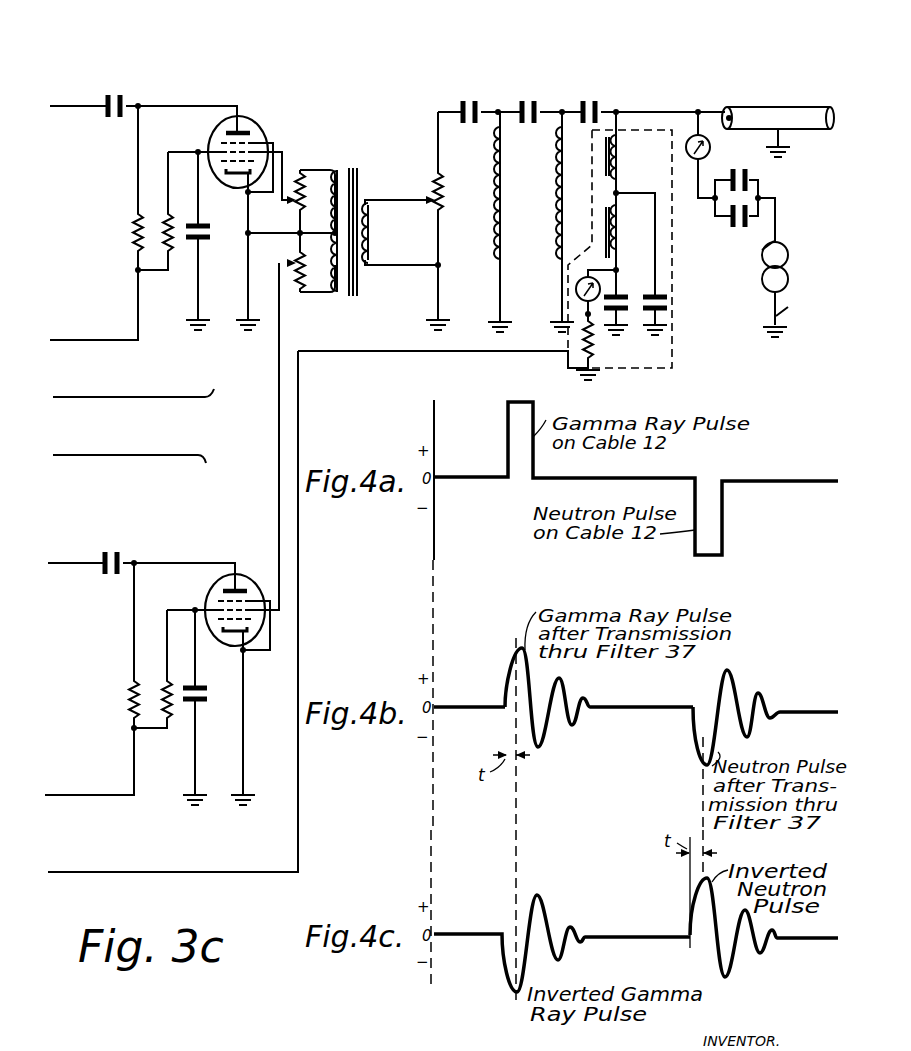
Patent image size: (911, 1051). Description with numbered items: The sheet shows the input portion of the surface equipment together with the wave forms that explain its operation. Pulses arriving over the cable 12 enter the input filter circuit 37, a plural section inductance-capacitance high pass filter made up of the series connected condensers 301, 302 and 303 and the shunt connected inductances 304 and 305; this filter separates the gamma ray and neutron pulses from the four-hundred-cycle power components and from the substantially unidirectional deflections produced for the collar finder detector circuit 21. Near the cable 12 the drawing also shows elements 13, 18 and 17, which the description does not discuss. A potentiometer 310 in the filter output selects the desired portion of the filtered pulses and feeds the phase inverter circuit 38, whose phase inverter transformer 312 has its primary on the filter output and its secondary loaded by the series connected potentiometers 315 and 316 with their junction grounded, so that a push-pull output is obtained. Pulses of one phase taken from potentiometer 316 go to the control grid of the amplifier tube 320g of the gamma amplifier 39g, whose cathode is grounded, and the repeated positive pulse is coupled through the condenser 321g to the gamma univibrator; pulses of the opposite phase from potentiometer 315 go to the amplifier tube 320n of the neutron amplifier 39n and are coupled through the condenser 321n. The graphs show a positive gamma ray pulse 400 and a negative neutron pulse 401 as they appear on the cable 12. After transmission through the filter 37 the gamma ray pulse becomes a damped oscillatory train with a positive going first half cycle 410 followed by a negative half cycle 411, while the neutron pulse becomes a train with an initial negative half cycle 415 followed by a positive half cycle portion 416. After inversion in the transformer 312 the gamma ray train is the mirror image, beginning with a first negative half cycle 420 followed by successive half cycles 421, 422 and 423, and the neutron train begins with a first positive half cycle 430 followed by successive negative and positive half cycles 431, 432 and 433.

In FIG. 3C, the amplifier 39g is at (276, 42).
In FIG. 3C, the condenser 321g is at (118, 96).
In FIG. 3C, the amplifier tube 320g is at (211, 134).
In FIG. 3C, the phase inverter circuit 38 is at (425, 98).
In FIG. 3C, the potentiometer 316 is at (308, 177).
In FIG. 3C, the potentiometer 315 is at (308, 292).
In FIG. 3C, the phase inverter transformer 312 is at (375, 155).
In FIG. 3C, the potentiometer 310 is at (432, 187).
In FIG. 3C, the input filter circuit 37 is at (765, 47).
In FIG. 3C, the condenser 303 is at (473, 93).
In FIG. 3C, the condenser 302 is at (536, 93).
In FIG. 3C, the condenser 301 is at (596, 93).
In FIG. 3C, the inductance 305 is at (497, 225).
In FIG. 3C, the inductance 304 is at (558, 225).
In FIG. 3C, the collar finder detector circuit 21 is at (672, 283).
In FIG. 3C, the meter 13 is at (709, 110).
In FIG. 3C, the cable 12 is at (797, 108).
In FIG. 3C, the capacitor network 18 is at (721, 208).
In FIG. 3C, the power supply 17 is at (789, 262).
In FIG. 3C, the amplifier 39n is at (268, 548).
In FIG. 3C, the condenser 321n is at (112, 577).
In FIG. 3C, the amplifier tube 320n is at (209, 591).
In FIG. 4A, the gamma ray pulse 400 is at (508, 431).
In FIG. 4A, the neutron pulse 401 is at (722, 525).
In FIG. 4B, the positive going first half cycle 410 is at (515, 666).
In FIG. 4B, the negative half cycle 411 is at (545, 745).
In FIG. 4B, the initial negative half cycle 415 is at (695, 742).
In FIG. 4B, the positive half cycle portion 416 is at (735, 683).
In FIG. 4C, the first negative half cycle 420 is at (506, 975).
In FIG. 4C, the half cycle 421 is at (540, 902).
In FIG. 4C, the half cycle 422 is at (563, 955).
In FIG. 4C, the half cycle 423 is at (570, 926).
In FIG. 4C, the first positive half cycle 430 is at (700, 885).
In FIG. 4C, the half cycle 431 is at (731, 972).
In FIG. 4C, the half cycle 432 is at (742, 915).
In FIG. 4C, the half cycle 433 is at (764, 950).